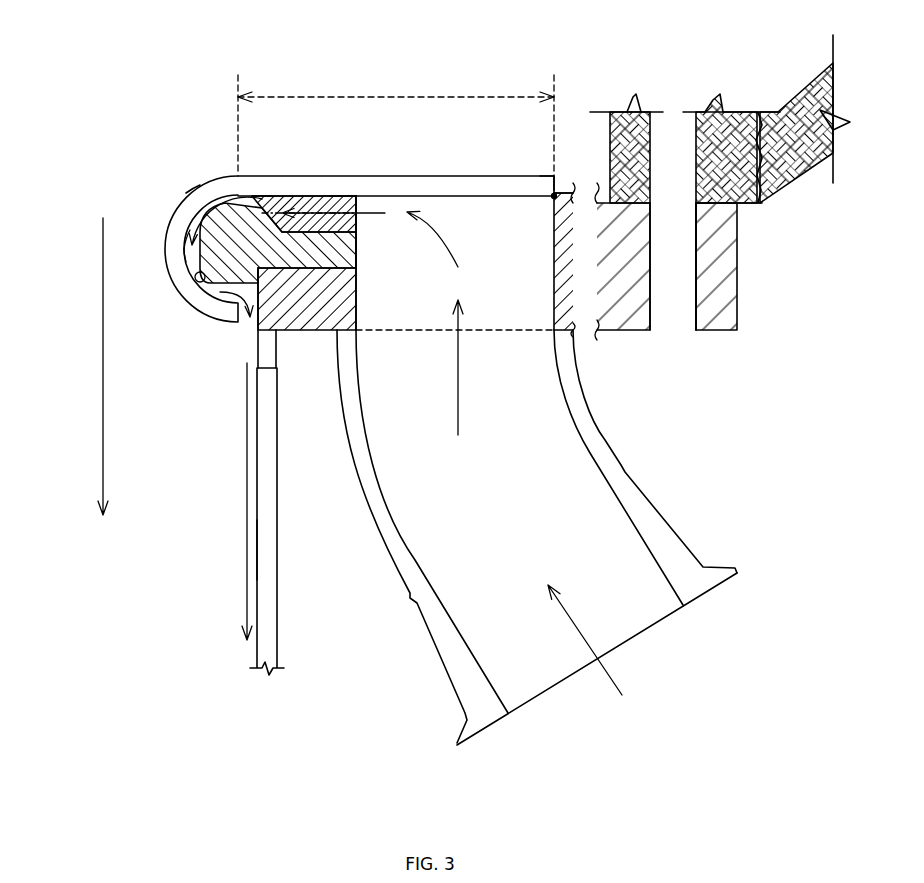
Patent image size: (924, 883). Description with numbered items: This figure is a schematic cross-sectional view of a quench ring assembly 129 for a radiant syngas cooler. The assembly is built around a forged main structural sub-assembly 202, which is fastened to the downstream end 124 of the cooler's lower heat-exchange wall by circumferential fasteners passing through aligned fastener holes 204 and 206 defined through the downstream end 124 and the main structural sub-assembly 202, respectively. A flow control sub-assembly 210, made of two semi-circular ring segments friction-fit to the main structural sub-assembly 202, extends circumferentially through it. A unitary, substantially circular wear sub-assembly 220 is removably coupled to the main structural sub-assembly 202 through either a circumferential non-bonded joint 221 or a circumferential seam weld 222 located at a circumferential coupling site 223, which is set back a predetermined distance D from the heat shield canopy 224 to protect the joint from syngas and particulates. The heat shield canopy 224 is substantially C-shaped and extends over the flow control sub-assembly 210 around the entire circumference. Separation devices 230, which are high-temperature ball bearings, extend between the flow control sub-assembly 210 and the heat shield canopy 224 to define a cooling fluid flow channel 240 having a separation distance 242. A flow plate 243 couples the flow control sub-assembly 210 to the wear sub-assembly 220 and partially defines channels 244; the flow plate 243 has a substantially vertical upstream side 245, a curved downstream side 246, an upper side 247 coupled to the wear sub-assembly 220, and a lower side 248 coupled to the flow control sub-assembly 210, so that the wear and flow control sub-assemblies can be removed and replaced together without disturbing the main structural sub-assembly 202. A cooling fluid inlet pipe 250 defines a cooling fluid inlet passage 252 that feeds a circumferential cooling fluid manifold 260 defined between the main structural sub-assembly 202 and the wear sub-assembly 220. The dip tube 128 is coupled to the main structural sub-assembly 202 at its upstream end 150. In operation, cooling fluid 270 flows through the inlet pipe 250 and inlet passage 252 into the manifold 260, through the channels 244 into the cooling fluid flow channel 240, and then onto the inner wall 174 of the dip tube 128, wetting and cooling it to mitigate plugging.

The quench ring assembly 129 is at (354, 200).
The downstream end 124 is at (642, 112).
The dip tube 128 is at (268, 452).
The upstream end 150 is at (268, 378).
The inner wall 174 is at (257, 548).
The main structural sub-assembly 202 is at (592, 259).
The fastener hole 204 is at (676, 130).
The fastener hole 206 is at (684, 287).
The flow control sub-assembly 210 is at (325, 232).
The wear sub-assembly 220 is at (271, 175).
The circumferential non-bonded joint 221 is at (553, 173).
The circumferential seam weld 222 is at (557, 193).
The circumferential coupling site 223 is at (571, 189).
The heat shield canopy 224 is at (176, 240).
The separation device 230 is at (198, 282).
The cooling fluid flow channel 240 is at (183, 245).
The separation distance 242 is at (186, 193).
The flow plate 243 is at (340, 200).
The channel 244 is at (364, 198).
The upstream side 245 is at (358, 230).
The downstream side 246 is at (206, 205).
The upper side 247 is at (272, 196).
The lower side 248 is at (313, 234).
The cooling fluid inlet pipe 250 is at (423, 635).
The cooling fluid inlet passage 252 is at (470, 519).
The circumferential cooling fluid manifold 260 is at (490, 259).
The cooling fluid 270 is at (200, 212).
The distance D is at (431, 90).